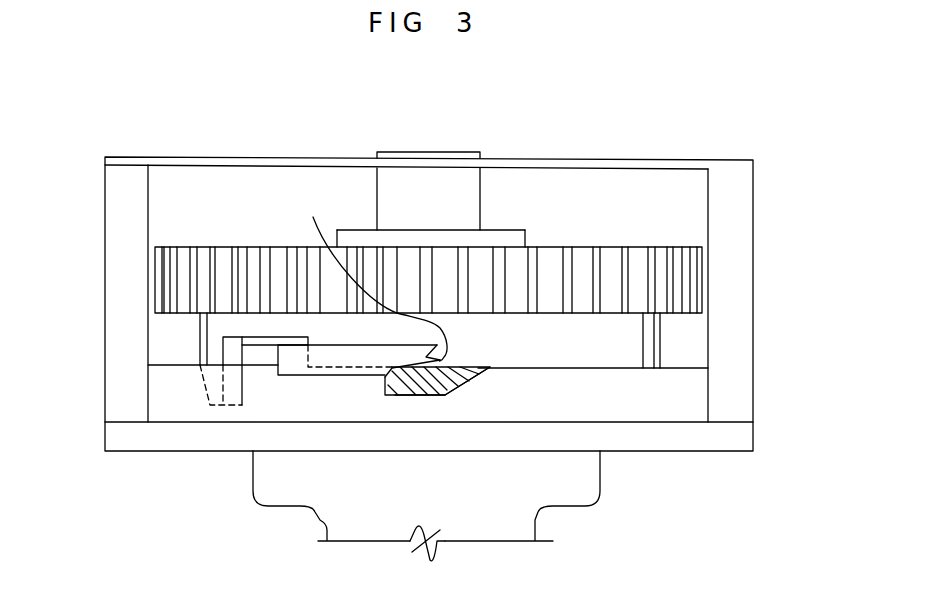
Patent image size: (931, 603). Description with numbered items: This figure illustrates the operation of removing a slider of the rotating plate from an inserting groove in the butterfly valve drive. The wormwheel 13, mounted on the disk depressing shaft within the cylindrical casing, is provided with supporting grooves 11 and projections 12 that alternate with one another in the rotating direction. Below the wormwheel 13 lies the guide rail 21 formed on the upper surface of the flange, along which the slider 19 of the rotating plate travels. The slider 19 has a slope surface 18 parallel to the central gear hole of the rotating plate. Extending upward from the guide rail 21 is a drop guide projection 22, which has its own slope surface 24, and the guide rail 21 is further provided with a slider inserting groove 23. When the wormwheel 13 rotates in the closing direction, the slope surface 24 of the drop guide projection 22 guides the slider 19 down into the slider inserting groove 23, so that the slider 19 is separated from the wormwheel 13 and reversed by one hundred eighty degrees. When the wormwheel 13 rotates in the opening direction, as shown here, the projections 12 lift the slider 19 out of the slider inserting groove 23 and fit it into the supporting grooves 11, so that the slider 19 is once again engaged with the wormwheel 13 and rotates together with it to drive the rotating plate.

The supporting groove 11 is at (262, 345).
The projection 12 is at (212, 345).
The wormwheel 13 is at (698, 267).
The slope surface 18 is at (393, 397).
The slider 19 is at (449, 377).
The guide rail 21 is at (637, 397).
The drop guide projection 22 is at (330, 353).
The slider inserting groove 23 is at (428, 398).
The slope surface 24 is at (373, 282).